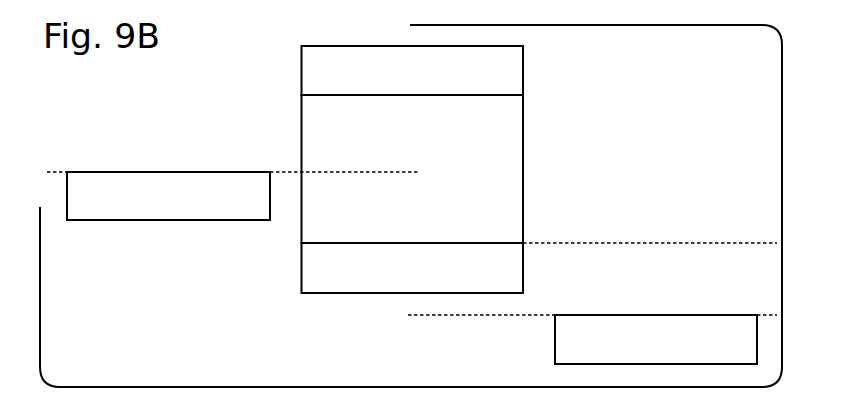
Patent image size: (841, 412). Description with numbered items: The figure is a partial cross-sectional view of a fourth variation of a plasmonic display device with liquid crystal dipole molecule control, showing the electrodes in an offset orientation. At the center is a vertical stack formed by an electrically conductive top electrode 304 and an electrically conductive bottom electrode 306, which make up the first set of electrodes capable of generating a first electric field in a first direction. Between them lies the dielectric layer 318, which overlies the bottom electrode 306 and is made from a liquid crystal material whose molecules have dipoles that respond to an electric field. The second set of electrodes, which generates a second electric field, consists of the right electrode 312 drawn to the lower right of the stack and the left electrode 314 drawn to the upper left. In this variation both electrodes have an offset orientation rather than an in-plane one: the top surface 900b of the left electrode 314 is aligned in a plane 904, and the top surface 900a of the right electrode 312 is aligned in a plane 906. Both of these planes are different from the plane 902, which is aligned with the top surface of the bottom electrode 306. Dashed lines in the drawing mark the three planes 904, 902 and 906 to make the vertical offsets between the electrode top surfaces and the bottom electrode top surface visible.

The top electrode 304 is at (413, 70).
The dielectric layer 318 is at (413, 169).
The bottom electrode 306 is at (413, 268).
The left electrode 314 is at (168, 196).
The right electrode 312 is at (656, 339).
The plane 904 is at (57, 170).
The plane 902 is at (775, 242).
The plane 906 is at (525, 318).
The top surface of right electrode 900a is at (713, 315).
The top surface of left electrode 900b is at (199, 172).